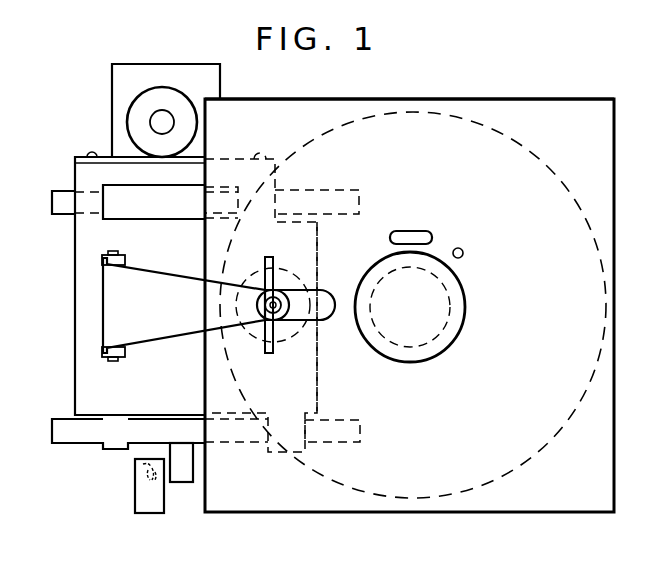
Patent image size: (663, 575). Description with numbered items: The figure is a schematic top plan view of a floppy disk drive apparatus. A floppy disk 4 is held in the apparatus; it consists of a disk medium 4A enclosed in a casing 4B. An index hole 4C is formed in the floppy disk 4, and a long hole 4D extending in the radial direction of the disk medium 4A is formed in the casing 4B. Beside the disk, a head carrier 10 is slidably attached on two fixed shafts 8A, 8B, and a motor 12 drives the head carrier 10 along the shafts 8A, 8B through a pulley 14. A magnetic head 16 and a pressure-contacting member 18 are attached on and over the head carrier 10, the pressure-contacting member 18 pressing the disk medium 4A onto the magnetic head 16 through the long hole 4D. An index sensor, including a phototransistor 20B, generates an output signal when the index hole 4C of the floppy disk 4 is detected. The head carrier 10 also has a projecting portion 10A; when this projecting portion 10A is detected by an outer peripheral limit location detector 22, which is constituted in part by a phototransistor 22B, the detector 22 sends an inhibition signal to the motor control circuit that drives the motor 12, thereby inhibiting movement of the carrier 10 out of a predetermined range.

The floppy disk 4 is at (563, 99).
The disk medium 4A is at (566, 190).
The casing 4B is at (503, 99).
The index hole 4C is at (462, 249).
The long hole 4D is at (328, 289).
The fixed shaft 8A is at (53, 204).
The fixed shaft 8B is at (52, 432).
The head carrier 10 is at (71, 290).
The projecting portion 10A is at (182, 485).
The motor 12 is at (112, 96).
The pulley 14 is at (168, 88).
The magnetic head 16 is at (285, 335).
The pressure-contacting member 18 is at (166, 330).
The phototransistor 20B is at (412, 231).
The outer peripheral limit location detector 22 is at (145, 514).
The phototransistor 22B is at (140, 468).